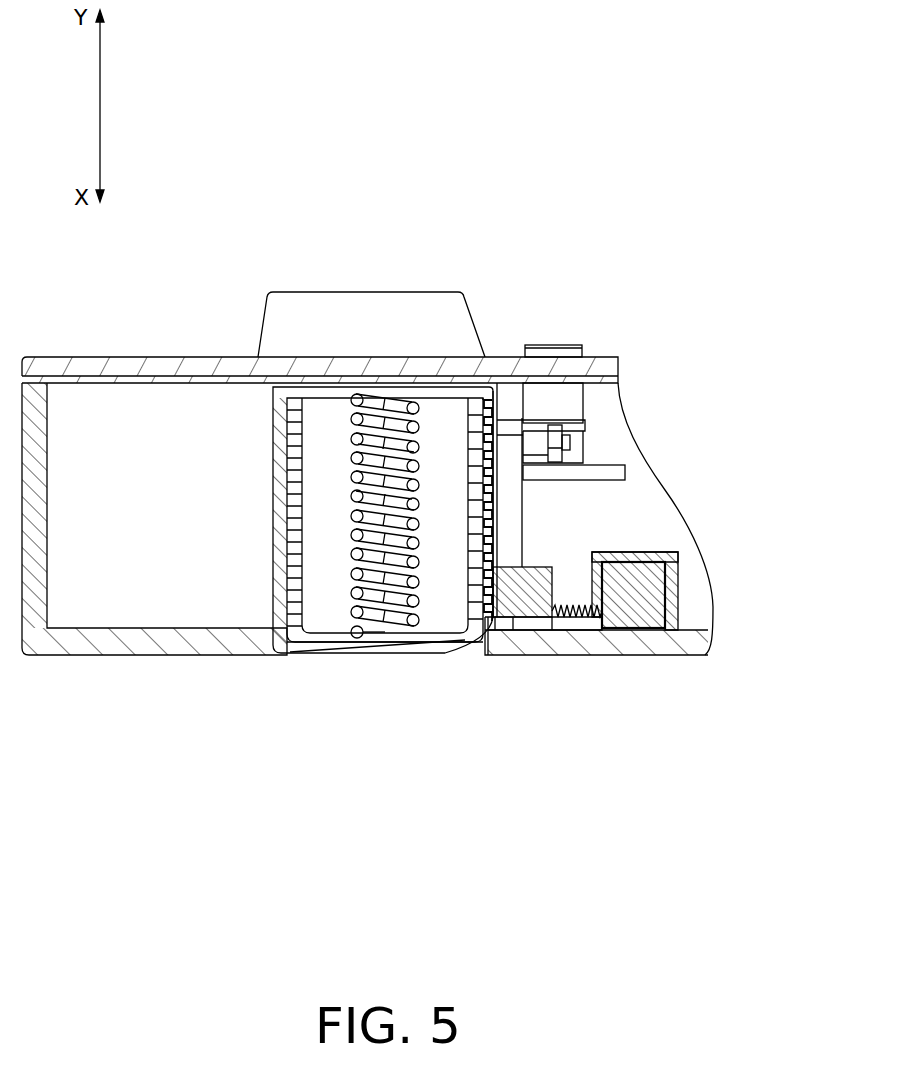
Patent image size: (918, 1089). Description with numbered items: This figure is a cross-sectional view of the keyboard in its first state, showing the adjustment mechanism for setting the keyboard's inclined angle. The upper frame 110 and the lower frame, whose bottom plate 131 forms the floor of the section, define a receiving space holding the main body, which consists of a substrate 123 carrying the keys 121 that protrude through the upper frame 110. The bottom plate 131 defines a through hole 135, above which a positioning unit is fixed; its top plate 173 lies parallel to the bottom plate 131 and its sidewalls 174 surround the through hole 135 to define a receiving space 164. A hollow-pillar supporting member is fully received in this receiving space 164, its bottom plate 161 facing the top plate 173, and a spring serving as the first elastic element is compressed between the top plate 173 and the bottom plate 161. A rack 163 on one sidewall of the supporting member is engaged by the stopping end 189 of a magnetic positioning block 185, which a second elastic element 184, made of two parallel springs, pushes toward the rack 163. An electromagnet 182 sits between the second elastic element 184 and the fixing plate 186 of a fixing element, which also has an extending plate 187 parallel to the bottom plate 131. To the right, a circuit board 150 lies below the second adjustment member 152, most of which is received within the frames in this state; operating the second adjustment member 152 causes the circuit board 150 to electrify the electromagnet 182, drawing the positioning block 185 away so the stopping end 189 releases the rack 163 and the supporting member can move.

The upper frame 110 is at (607, 365).
The keys 121 is at (282, 318).
The substrate 123 is at (612, 378).
The bottom plate 131 is at (183, 638).
The through hole 135 is at (293, 648).
The circuit board 150 is at (608, 470).
The second adjustment member 152 is at (562, 350).
The bottom plate 161 is at (392, 650).
The rack 163 is at (487, 395).
The receiving space 164 is at (328, 618).
The top plate 173 is at (360, 395).
The sidewalls 174 is at (283, 443).
The electromagnet 182 is at (642, 602).
The second elastic element 184 is at (580, 617).
The positioning block 185 is at (528, 605).
The fixing plate 186 is at (677, 588).
The extending plate 187 is at (632, 555).
The stopping end 189 is at (485, 610).